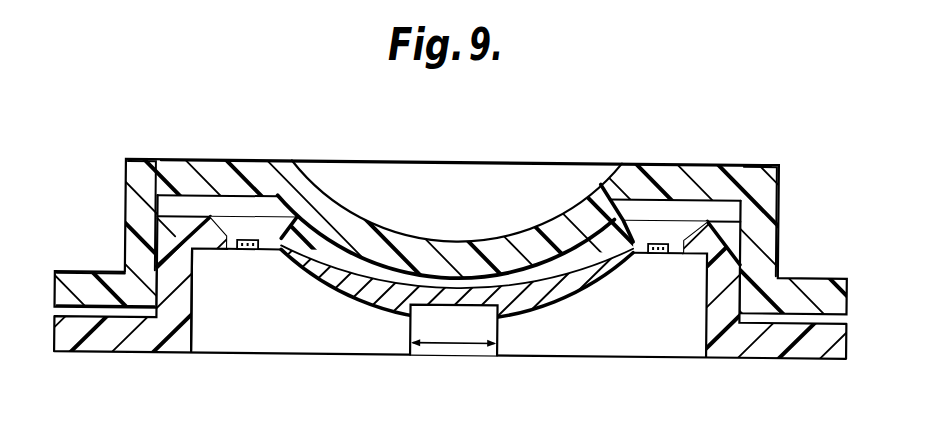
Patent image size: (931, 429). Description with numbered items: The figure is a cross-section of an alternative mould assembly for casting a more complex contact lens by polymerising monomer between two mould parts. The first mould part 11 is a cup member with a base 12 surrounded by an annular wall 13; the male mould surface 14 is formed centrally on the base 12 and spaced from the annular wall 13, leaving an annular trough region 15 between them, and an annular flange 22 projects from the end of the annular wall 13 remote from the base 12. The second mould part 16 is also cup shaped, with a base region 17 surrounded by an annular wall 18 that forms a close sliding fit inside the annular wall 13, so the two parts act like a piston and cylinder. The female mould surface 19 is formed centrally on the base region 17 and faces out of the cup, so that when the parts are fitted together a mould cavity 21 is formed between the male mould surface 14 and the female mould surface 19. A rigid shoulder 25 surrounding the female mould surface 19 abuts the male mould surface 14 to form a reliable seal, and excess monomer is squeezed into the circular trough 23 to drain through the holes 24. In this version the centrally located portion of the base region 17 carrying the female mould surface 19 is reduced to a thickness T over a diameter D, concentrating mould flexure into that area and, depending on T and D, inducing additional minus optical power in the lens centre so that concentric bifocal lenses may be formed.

The first mould part 11 is at (779, 170).
The base 12 is at (716, 176).
The annular wall 13 is at (132, 178).
The male mould surface 14 is at (378, 263).
The annular trough region 15 is at (245, 163).
The second mould part 16 is at (720, 345).
The base region 17 is at (692, 246).
The annular wall 18 is at (195, 326).
The female mould surface 19 is at (390, 284).
The mould cavity 21 is at (440, 285).
The annular flange 22 is at (75, 276).
The circular trough 23 is at (276, 236).
The holes 24 is at (249, 252).
The rigid shoulder 25 is at (622, 212).
The thickness T is at (478, 242).
The diameter D is at (452, 347).